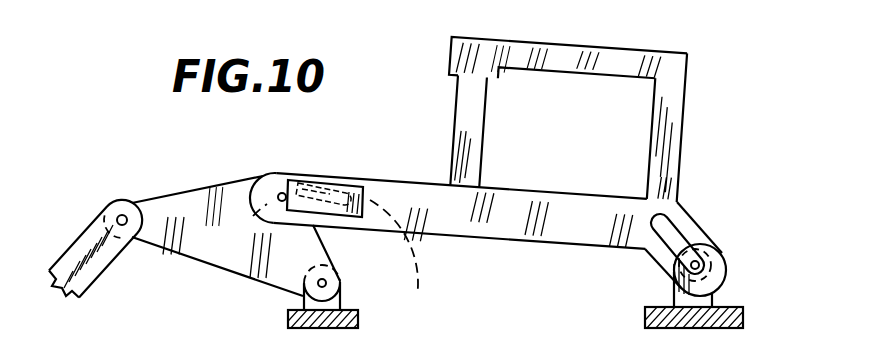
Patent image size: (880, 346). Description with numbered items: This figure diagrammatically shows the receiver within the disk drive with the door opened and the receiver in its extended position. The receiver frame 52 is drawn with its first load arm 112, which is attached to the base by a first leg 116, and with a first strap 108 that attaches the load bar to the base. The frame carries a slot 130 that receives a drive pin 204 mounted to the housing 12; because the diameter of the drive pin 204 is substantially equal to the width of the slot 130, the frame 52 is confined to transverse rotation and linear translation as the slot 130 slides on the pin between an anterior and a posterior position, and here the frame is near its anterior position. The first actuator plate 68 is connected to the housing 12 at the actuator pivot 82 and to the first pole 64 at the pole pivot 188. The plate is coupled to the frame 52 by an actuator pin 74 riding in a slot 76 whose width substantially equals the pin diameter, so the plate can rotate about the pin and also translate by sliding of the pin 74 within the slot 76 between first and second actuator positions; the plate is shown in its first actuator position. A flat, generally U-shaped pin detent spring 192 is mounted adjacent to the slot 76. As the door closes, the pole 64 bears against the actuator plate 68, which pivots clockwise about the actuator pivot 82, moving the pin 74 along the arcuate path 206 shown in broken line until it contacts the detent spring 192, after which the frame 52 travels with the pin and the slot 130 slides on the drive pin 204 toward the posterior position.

The housing 12 is at (350, 310).
The receiver frame 52 is at (563, 242).
The first pole 64 is at (97, 276).
The first actuator plate 68 is at (183, 205).
The actuator pin 74 is at (279, 194).
The slot 76 is at (284, 184).
The actuator pivot 82 is at (330, 280).
The first strap 108 is at (487, 122).
The first load arm 112 is at (595, 45).
The first leg 116 is at (685, 118).
The slot 130 is at (680, 230).
The pole pivot 188 is at (123, 216).
The pin detent spring 192 is at (357, 180).
The drive pin 204 is at (713, 253).
The arcuate path 206 is at (425, 275).